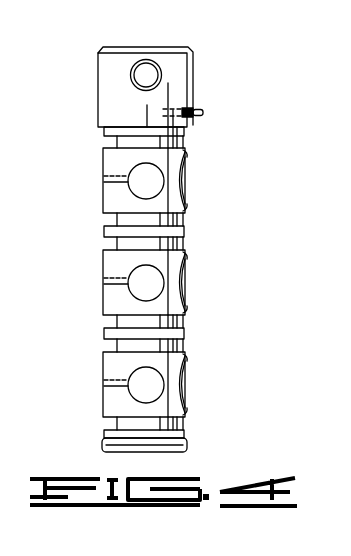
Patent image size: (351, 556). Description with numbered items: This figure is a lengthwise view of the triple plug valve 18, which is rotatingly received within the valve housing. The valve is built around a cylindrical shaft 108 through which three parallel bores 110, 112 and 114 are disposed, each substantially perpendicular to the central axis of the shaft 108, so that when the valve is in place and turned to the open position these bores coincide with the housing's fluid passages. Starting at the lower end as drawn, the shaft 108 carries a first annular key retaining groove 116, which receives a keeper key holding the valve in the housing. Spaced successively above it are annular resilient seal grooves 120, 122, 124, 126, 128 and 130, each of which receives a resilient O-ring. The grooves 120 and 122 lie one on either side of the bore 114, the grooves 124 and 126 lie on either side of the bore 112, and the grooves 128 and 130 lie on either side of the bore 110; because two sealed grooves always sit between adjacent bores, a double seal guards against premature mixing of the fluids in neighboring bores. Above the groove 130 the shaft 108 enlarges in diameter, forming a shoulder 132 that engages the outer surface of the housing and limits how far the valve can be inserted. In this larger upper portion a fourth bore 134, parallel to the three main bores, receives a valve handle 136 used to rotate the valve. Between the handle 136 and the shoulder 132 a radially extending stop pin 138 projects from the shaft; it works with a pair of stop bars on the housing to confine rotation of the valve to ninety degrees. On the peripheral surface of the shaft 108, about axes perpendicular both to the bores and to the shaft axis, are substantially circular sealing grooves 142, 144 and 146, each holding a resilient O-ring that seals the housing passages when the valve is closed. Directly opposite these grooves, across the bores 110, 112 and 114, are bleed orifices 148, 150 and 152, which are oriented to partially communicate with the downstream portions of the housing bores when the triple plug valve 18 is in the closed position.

The triple plug valve 18 is at (90, 55).
The cylindrical shaft 108 is at (194, 76).
The bore 110 is at (131, 188).
The bore 112 is at (131, 290).
The bore 114 is at (131, 392).
The first annular key retaining groove 116 is at (188, 446).
The annular resilient seal groove 120 is at (185, 432).
The annular resilient seal groove 122 is at (185, 340).
The annular resilient seal groove 124 is at (185, 322).
The annular resilient seal groove 126 is at (185, 238).
The annular resilient seal groove 128 is at (185, 221).
The annular resilient seal groove 130 is at (184, 146).
The shoulder 132 is at (184, 133).
The fourth bore 134 is at (157, 66).
The valve handle 136 is at (140, 61).
The stop pin 138 is at (198, 112).
The circular sealing groove 142 is at (190, 153).
The circular sealing groove 144 is at (190, 255).
The circular sealing groove 146 is at (190, 357).
The bleed orifice 148 is at (116, 176).
The bleed orifice 150 is at (116, 278).
The bleed orifice 152 is at (116, 380).